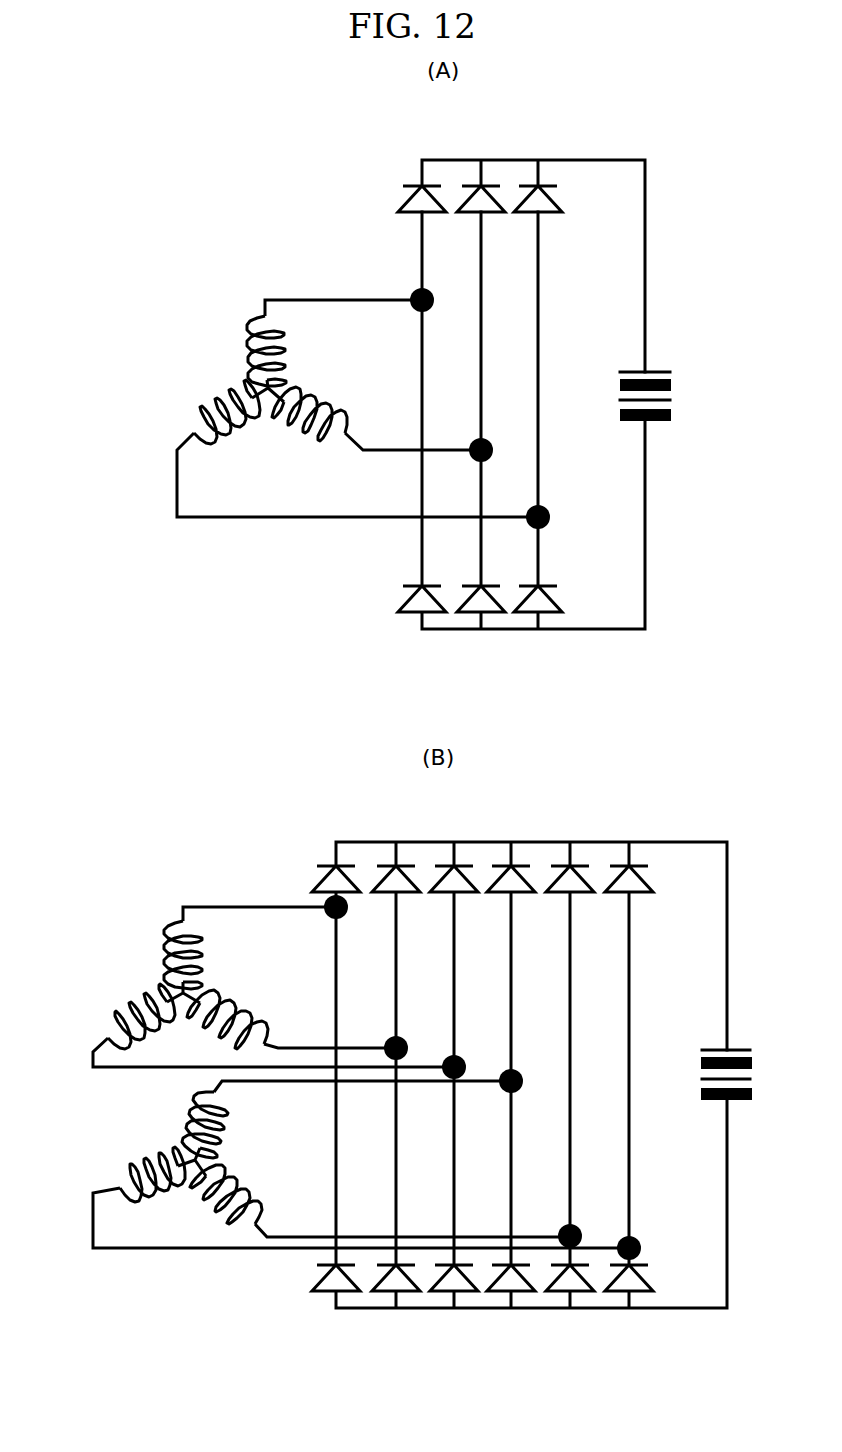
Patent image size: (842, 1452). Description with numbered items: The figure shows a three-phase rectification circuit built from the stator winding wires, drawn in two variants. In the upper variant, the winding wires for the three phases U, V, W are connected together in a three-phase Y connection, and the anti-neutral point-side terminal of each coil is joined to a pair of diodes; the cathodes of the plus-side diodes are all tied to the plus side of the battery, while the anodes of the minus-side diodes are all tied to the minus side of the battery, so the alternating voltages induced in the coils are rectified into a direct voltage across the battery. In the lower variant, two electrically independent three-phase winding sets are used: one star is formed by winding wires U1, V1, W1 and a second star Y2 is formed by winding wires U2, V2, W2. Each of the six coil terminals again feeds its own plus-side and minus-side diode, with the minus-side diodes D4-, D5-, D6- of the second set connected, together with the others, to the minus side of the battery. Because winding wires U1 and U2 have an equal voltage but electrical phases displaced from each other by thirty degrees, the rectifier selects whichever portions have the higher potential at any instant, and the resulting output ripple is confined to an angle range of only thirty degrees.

The second star-connected stator winding Y2 is at (338, 1164).
The U-phase winding U is at (334, 343).
The V-phase winding V is at (376, 410).
The W-phase winding W is at (357, 446).
The winding wire U1 is at (250, 948).
The V-phase winding of first star V1 is at (291, 1015).
The W-phase winding of first star W1 is at (269, 1022).
The winding wire U2 is at (346, 1119).
The V-phase winding of second star V2 is at (380, 1201).
The W-phase winding of second star W2 is at (360, 1190).
The negative-side rectifier diode D4 D4- is at (515, 1308).
The negative-side rectifier diode D5 D5- is at (574, 1308).
The negative-side rectifier diode D6 D6- is at (633, 1308).